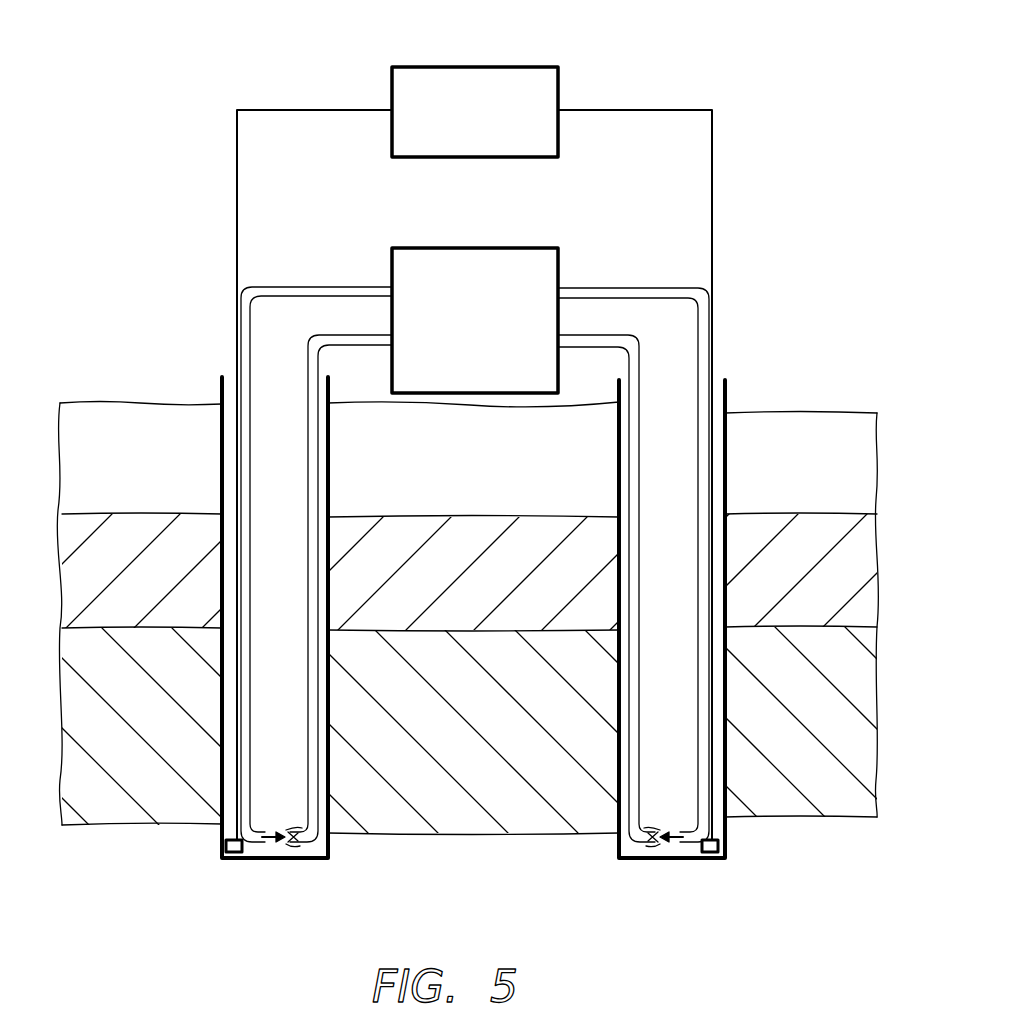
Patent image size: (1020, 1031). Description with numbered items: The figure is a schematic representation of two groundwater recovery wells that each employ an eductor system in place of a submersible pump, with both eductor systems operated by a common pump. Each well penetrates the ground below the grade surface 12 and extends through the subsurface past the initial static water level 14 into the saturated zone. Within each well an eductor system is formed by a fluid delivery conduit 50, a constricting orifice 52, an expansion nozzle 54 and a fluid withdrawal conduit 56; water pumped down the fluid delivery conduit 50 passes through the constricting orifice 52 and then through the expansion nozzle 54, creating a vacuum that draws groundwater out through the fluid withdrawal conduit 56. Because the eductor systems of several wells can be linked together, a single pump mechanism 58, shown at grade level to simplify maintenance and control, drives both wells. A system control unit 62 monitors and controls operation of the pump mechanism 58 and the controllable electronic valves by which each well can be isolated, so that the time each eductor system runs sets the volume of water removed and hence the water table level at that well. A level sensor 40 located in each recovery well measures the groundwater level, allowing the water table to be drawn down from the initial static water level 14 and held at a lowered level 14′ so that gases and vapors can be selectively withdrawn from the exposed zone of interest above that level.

The grade surface 12 is at (124, 404).
The initial static water level 14 is at (137, 514).
The first lowered water table level 14′ is at (85, 630).
The level sensor 40 is at (232, 856).
The fluid delivery conduit 50 is at (315, 287).
The constricting orifice 52 is at (257, 848).
The expansion nozzle 54 is at (323, 848).
The fluid withdrawal conduit 56 is at (352, 336).
The pump mechanism 58 is at (478, 248).
The system control unit 62 is at (480, 67).